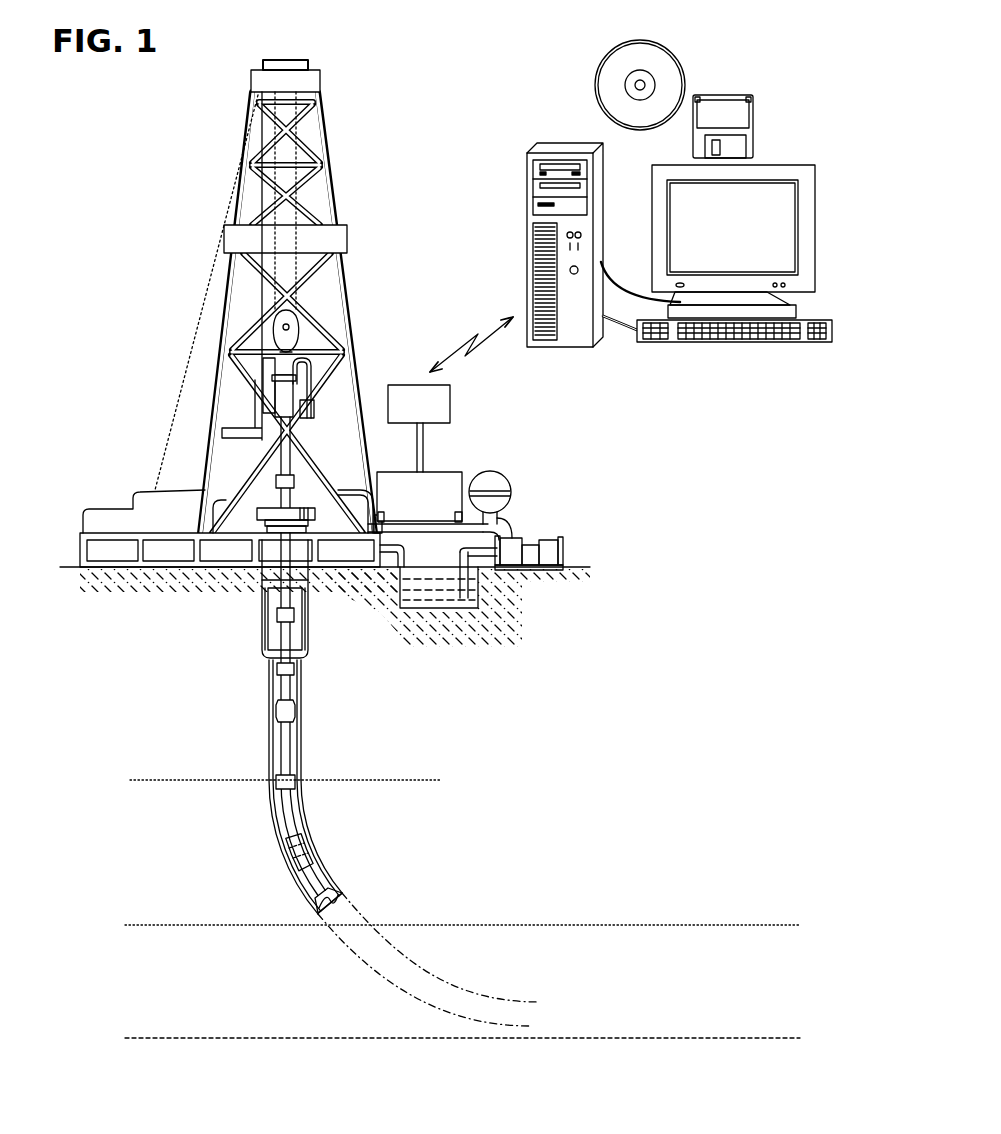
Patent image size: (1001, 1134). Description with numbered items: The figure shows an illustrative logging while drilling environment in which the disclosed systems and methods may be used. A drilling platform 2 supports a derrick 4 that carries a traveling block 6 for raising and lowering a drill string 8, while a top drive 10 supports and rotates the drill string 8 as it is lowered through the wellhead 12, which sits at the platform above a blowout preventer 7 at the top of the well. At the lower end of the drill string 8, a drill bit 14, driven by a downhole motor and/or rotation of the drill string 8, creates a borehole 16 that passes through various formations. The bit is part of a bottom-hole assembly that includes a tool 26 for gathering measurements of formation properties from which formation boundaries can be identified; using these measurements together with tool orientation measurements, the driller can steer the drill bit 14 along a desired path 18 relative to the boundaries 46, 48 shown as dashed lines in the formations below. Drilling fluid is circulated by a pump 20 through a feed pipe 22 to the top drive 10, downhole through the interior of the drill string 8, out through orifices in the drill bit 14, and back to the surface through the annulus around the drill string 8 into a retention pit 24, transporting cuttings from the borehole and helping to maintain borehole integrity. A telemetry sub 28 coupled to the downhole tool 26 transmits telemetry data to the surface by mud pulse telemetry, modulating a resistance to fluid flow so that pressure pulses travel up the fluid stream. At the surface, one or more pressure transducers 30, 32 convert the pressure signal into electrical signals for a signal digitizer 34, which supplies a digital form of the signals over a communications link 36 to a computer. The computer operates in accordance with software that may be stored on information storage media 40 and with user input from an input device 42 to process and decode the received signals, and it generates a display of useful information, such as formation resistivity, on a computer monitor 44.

The drilling platform 2 is at (78, 543).
The derrick 4 is at (325, 197).
The traveling block 6 is at (291, 330).
The blowout preventer / wellhead 7 is at (278, 669).
The drill string 8 is at (292, 690).
The top drive 10 is at (286, 400).
The wellhead 12 is at (268, 503).
The drill bit 14 is at (322, 883).
The borehole 16 is at (303, 707).
The desired path 18 is at (460, 993).
The pump 20 is at (513, 543).
The feed pipe 22 is at (477, 530).
The retention pit 24 is at (420, 592).
The tool 26 is at (304, 874).
The telemetry sub 28 is at (292, 843).
The pressure transducer 30 is at (384, 515).
The pressure transducer 32 is at (462, 517).
The signal digitizer 34 is at (419, 428).
The communications link 36 is at (471, 337).
The information storage media 40 is at (708, 93).
The input device 42 is at (800, 342).
The computer monitor 44 is at (800, 290).
The boundary 46 is at (650, 928).
The boundary 48 is at (667, 1042).